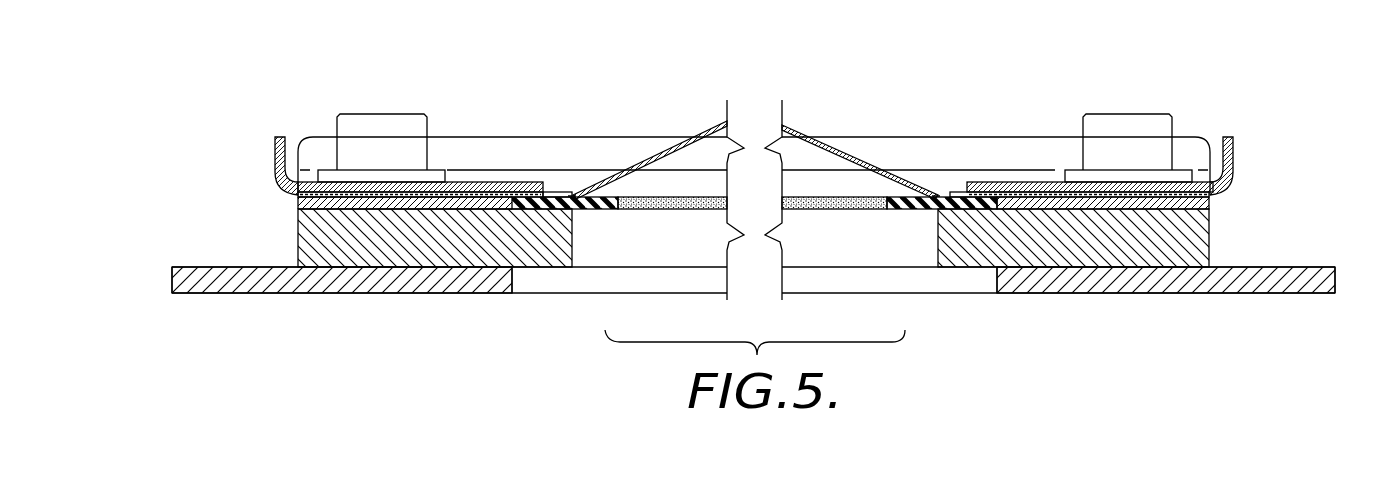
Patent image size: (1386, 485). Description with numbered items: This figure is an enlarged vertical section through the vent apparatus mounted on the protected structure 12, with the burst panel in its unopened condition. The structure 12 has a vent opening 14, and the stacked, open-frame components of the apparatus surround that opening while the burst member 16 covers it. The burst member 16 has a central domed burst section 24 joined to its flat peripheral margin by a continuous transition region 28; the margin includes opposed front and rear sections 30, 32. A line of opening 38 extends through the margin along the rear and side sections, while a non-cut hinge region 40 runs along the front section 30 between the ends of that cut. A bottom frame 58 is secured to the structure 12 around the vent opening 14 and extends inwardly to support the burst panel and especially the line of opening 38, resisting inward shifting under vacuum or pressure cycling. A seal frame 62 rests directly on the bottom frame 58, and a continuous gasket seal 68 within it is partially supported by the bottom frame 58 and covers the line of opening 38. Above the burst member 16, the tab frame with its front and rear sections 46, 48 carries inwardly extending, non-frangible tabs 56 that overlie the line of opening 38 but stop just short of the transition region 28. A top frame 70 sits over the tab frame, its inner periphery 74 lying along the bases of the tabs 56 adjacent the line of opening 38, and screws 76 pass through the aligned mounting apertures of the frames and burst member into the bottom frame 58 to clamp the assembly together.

The structure 12 is at (220, 283).
The vent opening 14 is at (855, 243).
The burst member 16 is at (706, 124).
The central domed burst section 24 is at (838, 148).
The transition region 28 is at (568, 193).
The front section 30 is at (993, 197).
The rear section 32 is at (422, 200).
The line of opening 38 is at (543, 210).
The hinge region 40 is at (1180, 197).
The front section of tab frame 46 is at (1037, 193).
The rear section of tab frame 48 is at (480, 188).
The tabs 56 is at (557, 195).
The bottom frame 58 is at (317, 238).
The seal frame 62 is at (303, 205).
The gasket seal 68 is at (607, 210).
The top frame 70 is at (280, 153).
The inner periphery 74 is at (553, 190).
The screws 76 is at (388, 127).